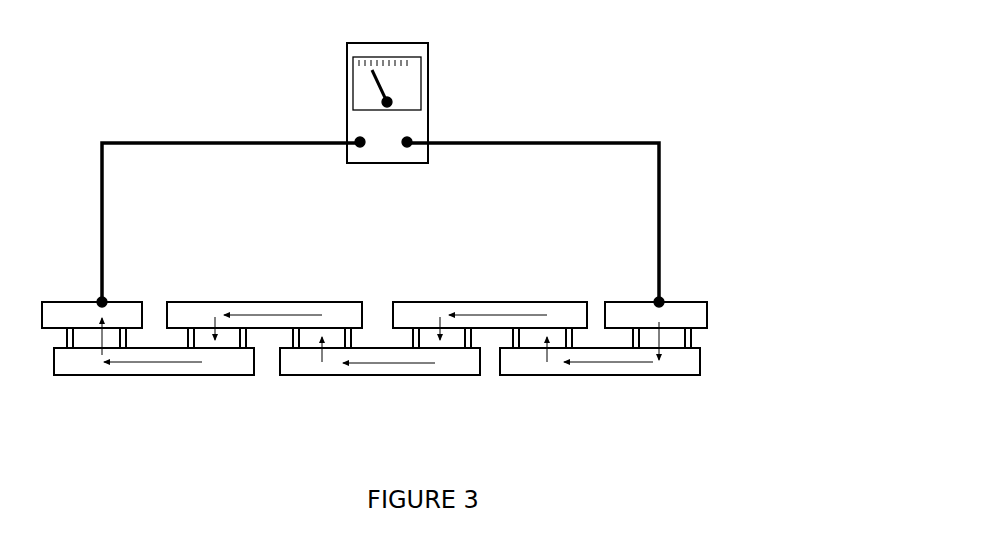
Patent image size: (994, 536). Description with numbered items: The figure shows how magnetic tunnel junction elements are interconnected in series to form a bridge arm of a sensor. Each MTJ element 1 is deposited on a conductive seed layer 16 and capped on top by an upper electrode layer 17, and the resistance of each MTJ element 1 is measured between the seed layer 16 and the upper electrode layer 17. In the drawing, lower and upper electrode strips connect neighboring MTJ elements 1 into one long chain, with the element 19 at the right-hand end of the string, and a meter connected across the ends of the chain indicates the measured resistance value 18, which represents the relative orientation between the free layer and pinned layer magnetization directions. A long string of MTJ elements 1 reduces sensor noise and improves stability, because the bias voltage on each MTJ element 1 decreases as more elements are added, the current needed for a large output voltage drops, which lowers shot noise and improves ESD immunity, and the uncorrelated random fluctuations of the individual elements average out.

The MTJ element 1 is at (678, 335).
The conductive seed layer 16 is at (313, 373).
The upper electrode layer 17 is at (465, 302).
The measured resistance value 18 is at (410, 128).
The lower collector 19 is at (603, 367).